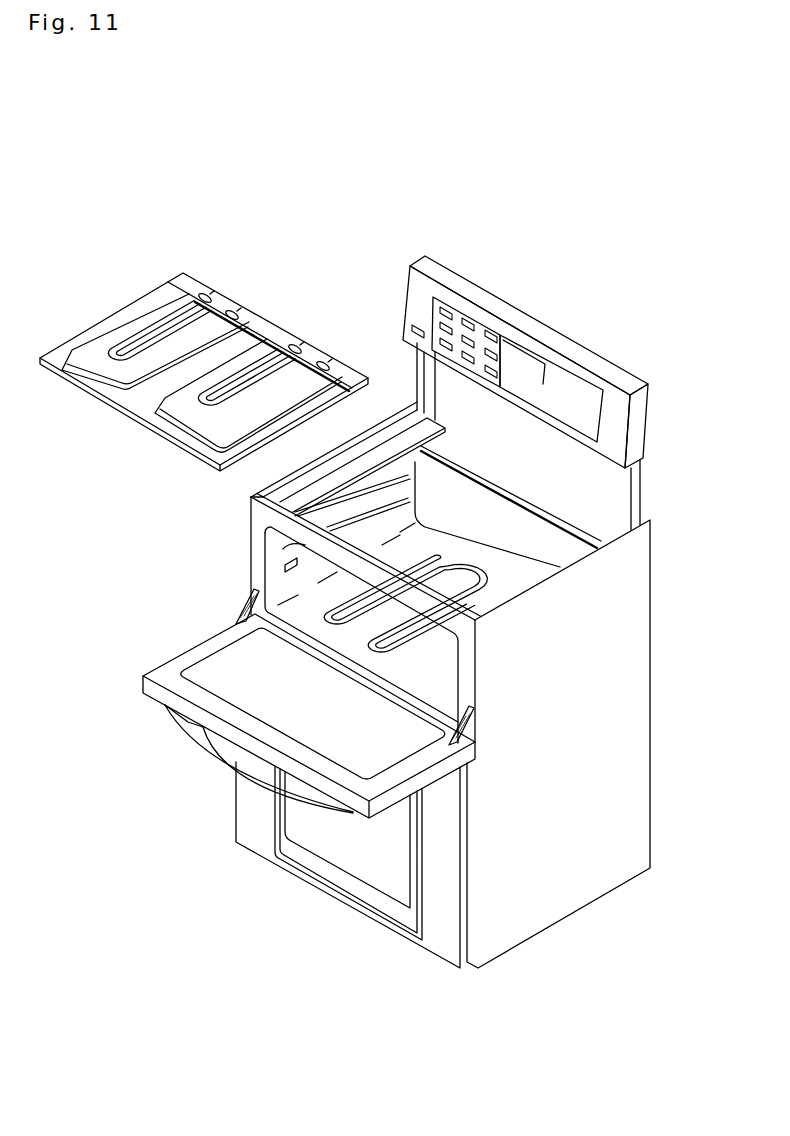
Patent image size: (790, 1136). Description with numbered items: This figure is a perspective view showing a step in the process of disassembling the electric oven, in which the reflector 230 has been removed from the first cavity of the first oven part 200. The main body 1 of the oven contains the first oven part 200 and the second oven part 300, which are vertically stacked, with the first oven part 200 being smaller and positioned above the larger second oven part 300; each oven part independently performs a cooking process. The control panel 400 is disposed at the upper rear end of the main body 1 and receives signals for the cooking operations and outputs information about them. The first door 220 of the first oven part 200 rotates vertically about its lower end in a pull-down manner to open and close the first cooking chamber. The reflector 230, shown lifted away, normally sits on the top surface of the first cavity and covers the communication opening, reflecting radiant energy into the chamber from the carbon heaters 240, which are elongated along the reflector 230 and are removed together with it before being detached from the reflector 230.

The main body 1 is at (257, 180).
The first oven part 200 is at (213, 540).
The first door 220 is at (160, 677).
The reflector 230 is at (111, 296).
The carbon heaters 240 is at (205, 289).
The second oven part 300 is at (211, 765).
The control panel 400 is at (571, 321).